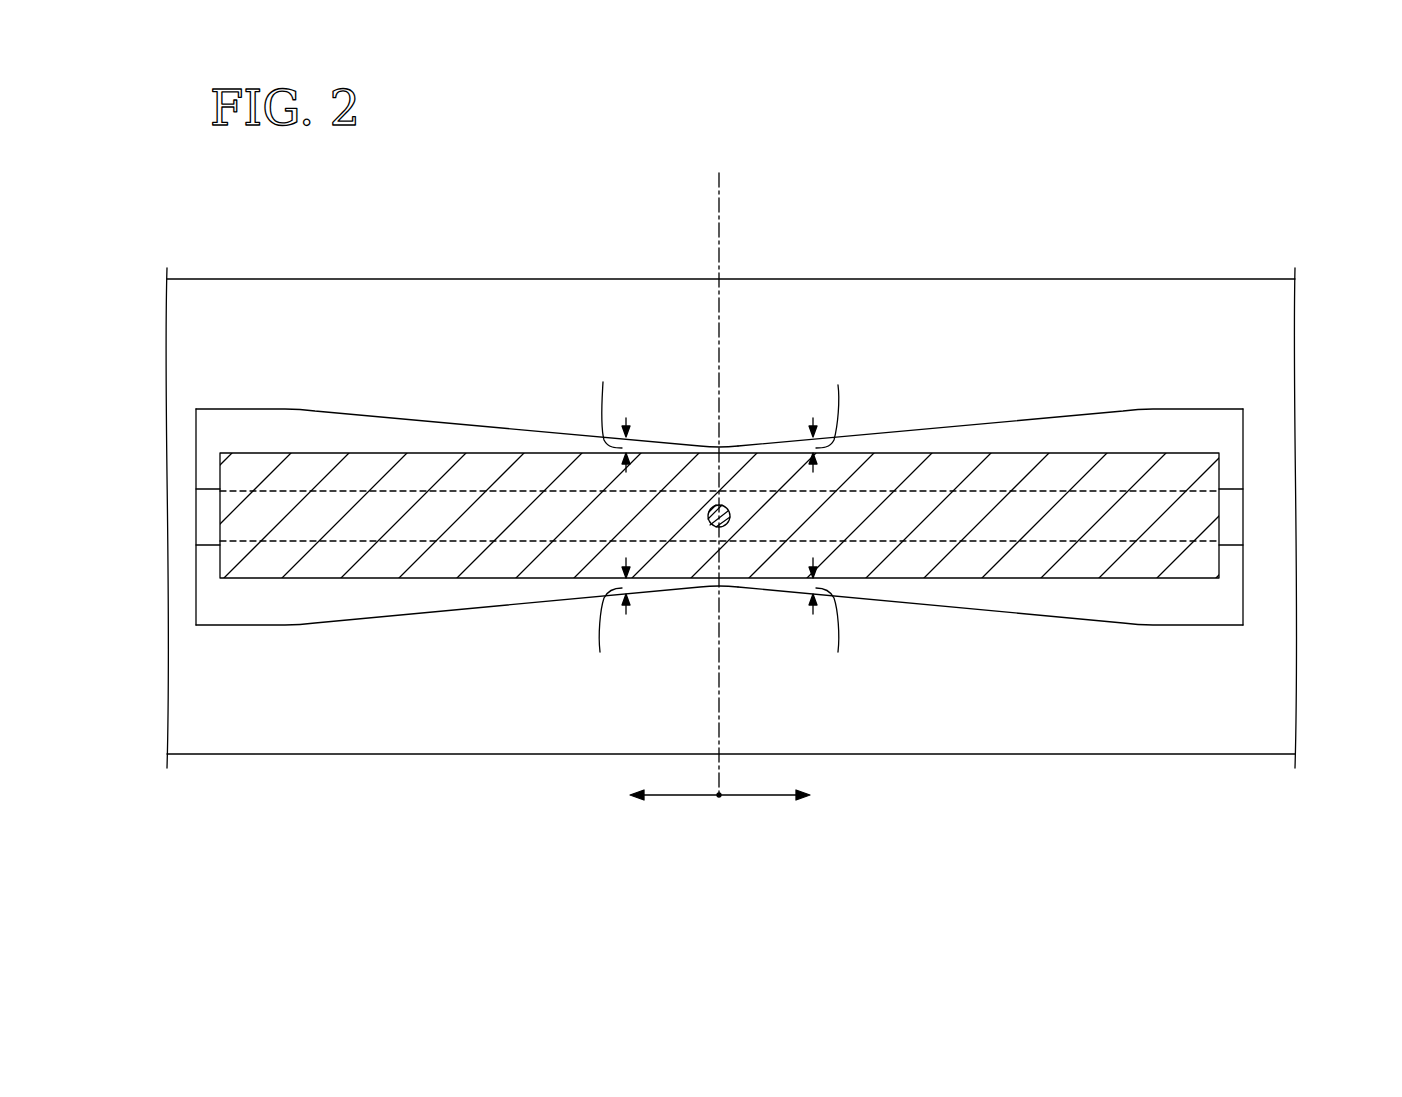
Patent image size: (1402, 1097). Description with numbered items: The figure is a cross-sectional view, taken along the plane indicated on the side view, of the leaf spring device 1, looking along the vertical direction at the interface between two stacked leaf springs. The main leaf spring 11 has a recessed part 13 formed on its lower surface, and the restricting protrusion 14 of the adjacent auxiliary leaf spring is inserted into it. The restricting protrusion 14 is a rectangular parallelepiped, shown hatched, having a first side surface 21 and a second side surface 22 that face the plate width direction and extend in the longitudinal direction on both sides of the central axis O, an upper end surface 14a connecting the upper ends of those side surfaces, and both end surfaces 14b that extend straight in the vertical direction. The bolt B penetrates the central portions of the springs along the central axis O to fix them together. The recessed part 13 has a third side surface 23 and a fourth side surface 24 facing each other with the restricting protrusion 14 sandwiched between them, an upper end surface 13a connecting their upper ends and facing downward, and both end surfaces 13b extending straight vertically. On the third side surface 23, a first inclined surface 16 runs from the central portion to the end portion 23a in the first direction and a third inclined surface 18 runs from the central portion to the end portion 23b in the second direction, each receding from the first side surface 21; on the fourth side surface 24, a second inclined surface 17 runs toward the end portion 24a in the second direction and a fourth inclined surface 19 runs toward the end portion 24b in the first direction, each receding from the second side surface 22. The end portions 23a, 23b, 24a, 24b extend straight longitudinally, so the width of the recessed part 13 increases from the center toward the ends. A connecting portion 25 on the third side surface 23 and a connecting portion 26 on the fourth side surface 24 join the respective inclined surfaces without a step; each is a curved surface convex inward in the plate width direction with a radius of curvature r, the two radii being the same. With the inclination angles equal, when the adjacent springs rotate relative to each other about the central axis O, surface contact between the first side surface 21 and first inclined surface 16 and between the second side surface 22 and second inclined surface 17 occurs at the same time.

The leaf spring device 1 is at (1288, 183).
The main leaf spring 11 is at (1170, 265).
The recessed part 13 is at (1225, 609).
The upper end surface 13a is at (208, 497).
The end surfaces 13b is at (1243, 422).
The restricting protrusion 14 is at (1205, 440).
The upper end surface 14a is at (962, 510).
The end surfaces 14b is at (1222, 507).
The first inclined surface 16 is at (900, 448).
The second inclined surface 17 is at (440, 600).
The third inclined surface 18 is at (490, 431).
The fourth inclined surface 19 is at (1027, 607).
The first side surface 21 is at (1025, 445).
The second side surface 22 is at (968, 592).
The third side surface 23 is at (402, 430).
The end portion 23a is at (1160, 409).
The end portion 23b is at (218, 409).
The fourth side surface 24 is at (363, 605).
The end portion 24a is at (250, 625).
The end portion 24b is at (1190, 622).
The connecting portion 25 is at (719, 448).
The connecting portion 26 is at (718, 585).
The central axis O is at (724, 508).
The bolt B is at (731, 517).
The radius of curvature r is at (728, 441).